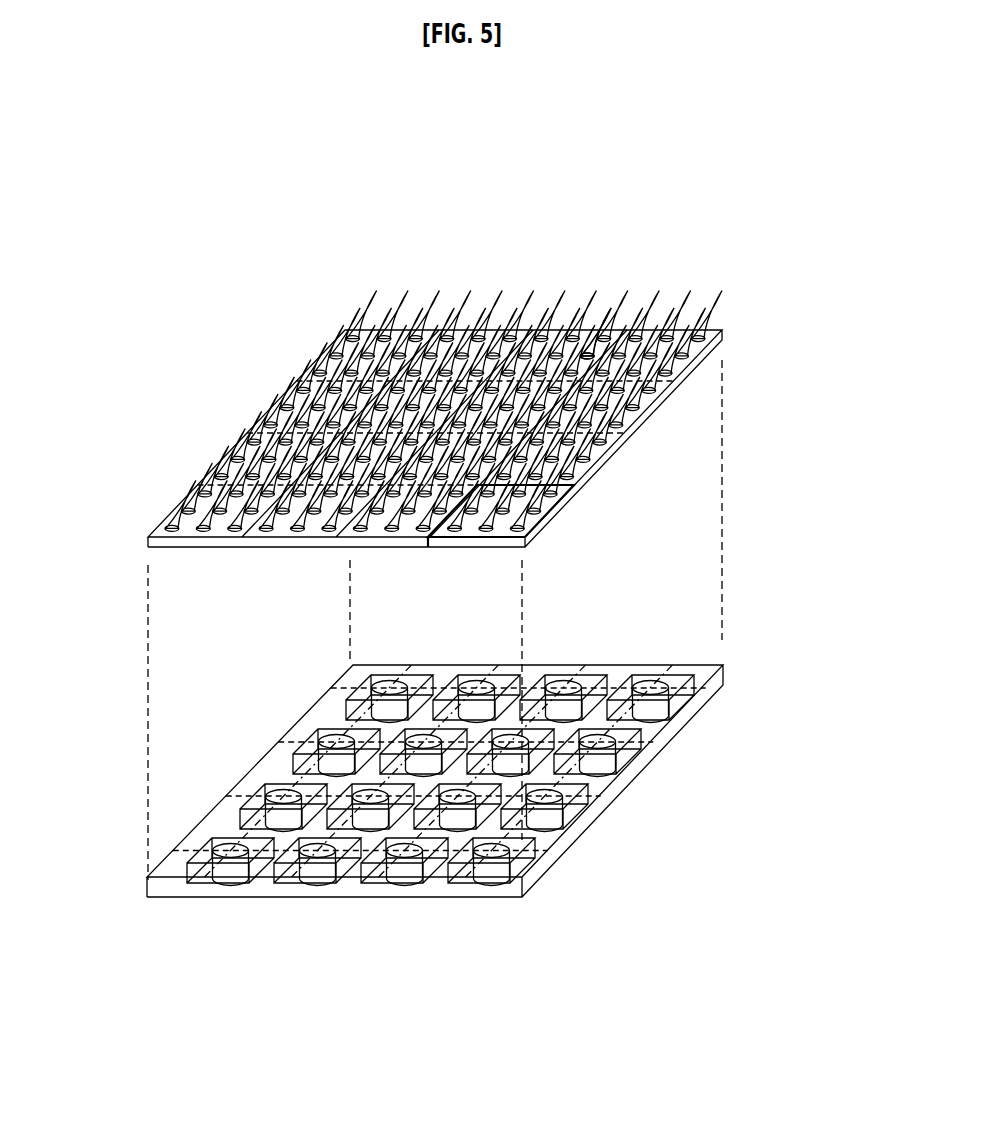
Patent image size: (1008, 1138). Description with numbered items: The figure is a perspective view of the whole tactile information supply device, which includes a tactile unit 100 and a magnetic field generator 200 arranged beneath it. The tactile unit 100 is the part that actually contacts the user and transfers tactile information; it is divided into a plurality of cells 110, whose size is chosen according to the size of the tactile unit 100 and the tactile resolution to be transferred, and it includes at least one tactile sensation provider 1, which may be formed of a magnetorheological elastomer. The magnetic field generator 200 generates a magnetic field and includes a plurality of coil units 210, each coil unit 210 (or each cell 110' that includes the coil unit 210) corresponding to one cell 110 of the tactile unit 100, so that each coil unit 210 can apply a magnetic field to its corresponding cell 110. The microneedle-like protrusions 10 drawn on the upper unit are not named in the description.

The tactile sensation provider 1 is at (778, 156).
The microneedle 10 is at (613, 306).
The tactile unit 100 is at (198, 374).
The cell 110 is at (564, 516).
The magnetic field generator 200 is at (162, 792).
The coil unit 210 is at (282, 788).
The cell 110' is at (569, 859).